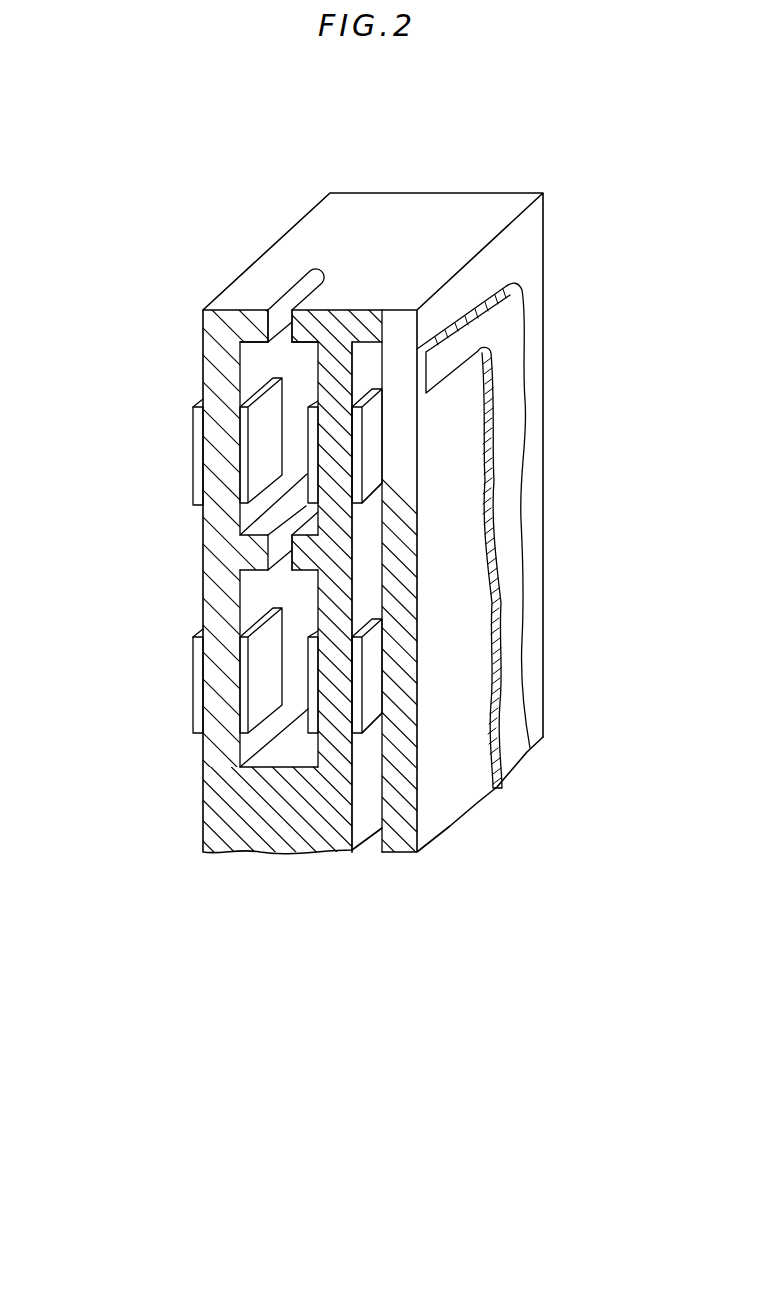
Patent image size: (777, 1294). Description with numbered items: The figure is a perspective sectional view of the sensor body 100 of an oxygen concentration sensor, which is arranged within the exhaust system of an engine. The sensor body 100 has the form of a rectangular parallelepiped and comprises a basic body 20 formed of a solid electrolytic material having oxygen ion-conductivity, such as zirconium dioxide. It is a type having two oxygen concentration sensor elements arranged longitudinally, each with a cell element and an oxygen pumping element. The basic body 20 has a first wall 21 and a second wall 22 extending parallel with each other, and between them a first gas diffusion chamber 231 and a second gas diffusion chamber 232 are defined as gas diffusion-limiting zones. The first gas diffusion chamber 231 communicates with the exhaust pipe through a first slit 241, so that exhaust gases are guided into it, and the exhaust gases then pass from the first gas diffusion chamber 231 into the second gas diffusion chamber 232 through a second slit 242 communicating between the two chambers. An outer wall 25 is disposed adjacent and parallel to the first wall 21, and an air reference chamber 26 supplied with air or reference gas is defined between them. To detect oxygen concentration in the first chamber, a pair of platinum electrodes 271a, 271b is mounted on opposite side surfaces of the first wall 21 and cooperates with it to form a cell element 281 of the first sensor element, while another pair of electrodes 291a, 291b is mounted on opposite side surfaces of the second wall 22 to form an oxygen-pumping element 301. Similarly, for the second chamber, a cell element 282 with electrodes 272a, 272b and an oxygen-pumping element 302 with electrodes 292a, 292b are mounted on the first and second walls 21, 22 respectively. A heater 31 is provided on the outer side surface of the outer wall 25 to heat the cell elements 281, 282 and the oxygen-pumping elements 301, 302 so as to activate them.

The sensor body 100 is at (542, 192).
The basic body 20 is at (203, 612).
The first wall 21 is at (335, 703).
The second wall 22 is at (222, 391).
The first gas diffusion chamber 231 is at (243, 379).
The second gas diffusion chamber 232 is at (270, 762).
The first slit 241 is at (292, 297).
The second slit 242 is at (262, 582).
The outer wall 25 is at (405, 842).
The air reference chamber 26 is at (363, 814).
The electrode 271a is at (368, 448).
The electrode 271b is at (312, 437).
The electrode 272a is at (372, 662).
The electrode 272b is at (287, 727).
The cell element 281 is at (363, 482).
The cell element 282 is at (365, 710).
The electrode 291a is at (194, 480).
The electrode 291b is at (272, 383).
The electrode 292a is at (193, 702).
The electrode 292b is at (257, 700).
The oxygen-pumping element 301 is at (193, 419).
The oxygen-pumping element 302 is at (193, 655).
The heater 31 is at (506, 646).